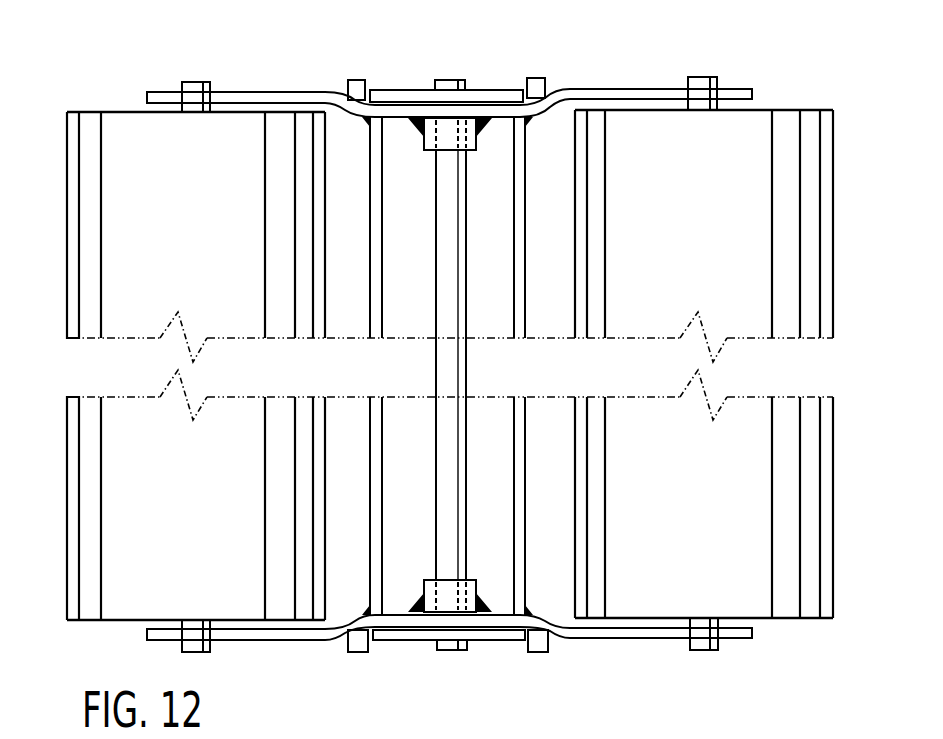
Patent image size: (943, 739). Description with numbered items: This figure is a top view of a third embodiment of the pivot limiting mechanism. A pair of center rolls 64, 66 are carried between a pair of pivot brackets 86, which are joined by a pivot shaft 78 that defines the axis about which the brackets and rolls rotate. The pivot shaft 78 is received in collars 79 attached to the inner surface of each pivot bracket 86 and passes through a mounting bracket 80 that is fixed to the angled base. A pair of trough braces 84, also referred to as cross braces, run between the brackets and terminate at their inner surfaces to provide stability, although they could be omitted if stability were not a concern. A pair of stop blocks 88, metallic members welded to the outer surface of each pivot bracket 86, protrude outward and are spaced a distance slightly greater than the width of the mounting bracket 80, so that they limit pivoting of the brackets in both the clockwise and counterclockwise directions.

The center roll 64 is at (68, 223).
The center roll 66 is at (834, 243).
The pivot shaft 78 is at (467, 520).
The collar 79 is at (424, 140).
The mounting bracket 80 is at (383, 90).
The trough brace 84 is at (514, 236).
The pivot bracket 86 is at (604, 90).
The stop block 88 is at (538, 653).